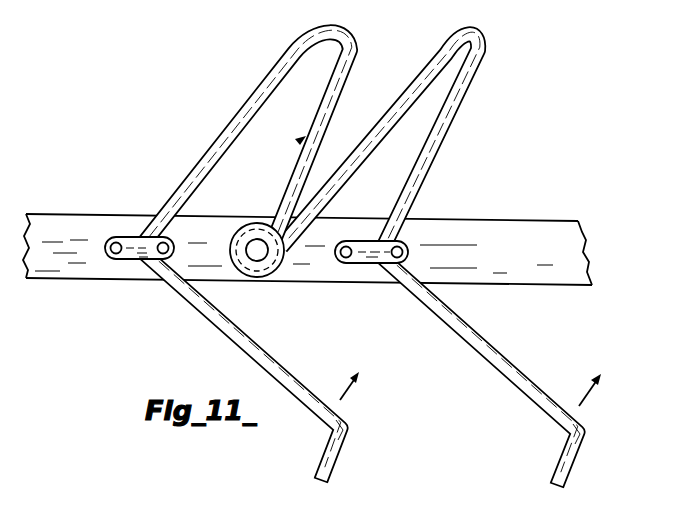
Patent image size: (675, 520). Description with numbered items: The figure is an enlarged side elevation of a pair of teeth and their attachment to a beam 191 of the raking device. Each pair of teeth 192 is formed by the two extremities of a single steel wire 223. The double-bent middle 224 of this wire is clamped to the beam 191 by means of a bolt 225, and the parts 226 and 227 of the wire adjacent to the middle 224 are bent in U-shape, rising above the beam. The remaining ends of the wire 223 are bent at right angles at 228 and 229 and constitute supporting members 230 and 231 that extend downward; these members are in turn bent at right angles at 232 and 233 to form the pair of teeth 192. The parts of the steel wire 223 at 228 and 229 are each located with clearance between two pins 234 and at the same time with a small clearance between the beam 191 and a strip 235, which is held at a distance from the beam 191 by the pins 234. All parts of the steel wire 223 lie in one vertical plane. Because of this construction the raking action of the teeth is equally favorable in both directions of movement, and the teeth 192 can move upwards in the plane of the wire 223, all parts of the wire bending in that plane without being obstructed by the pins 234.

The beam 191 is at (517, 226).
The teeth 192 is at (318, 473).
The steel wire 223 is at (300, 141).
The double-bent middle 224 is at (245, 279).
The bolt 225 is at (259, 247).
The U-shaped wire part 226 is at (344, 55).
The U-shaped wire part 227 is at (470, 58).
The right-angle bend 228 is at (137, 277).
The right-angle bend 229 is at (378, 281).
The supporting member 230 is at (282, 365).
The supporting member 231 is at (514, 367).
The right-angle bend 232 is at (353, 434).
The right-angle bend 233 is at (581, 437).
The pins 234 is at (115, 241).
The strip 235 is at (132, 238).